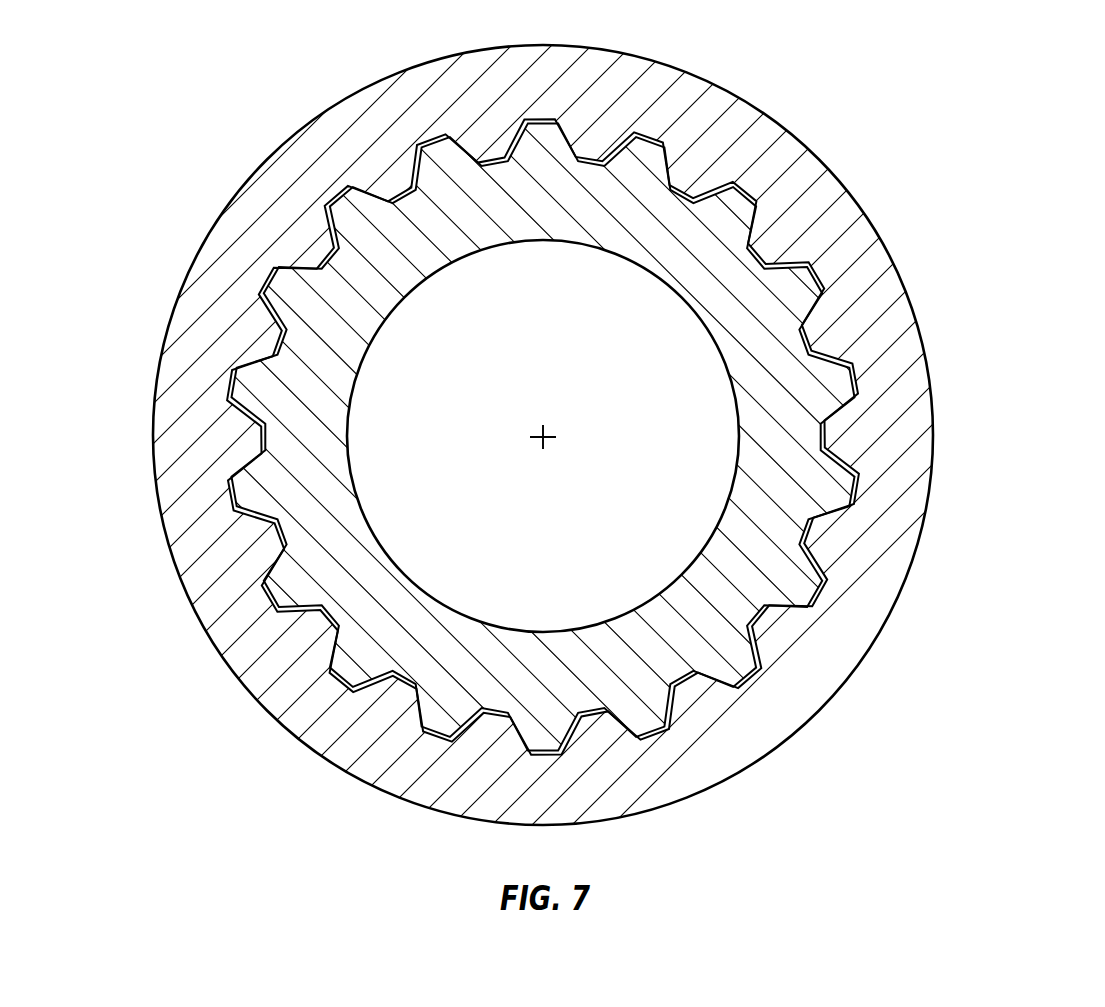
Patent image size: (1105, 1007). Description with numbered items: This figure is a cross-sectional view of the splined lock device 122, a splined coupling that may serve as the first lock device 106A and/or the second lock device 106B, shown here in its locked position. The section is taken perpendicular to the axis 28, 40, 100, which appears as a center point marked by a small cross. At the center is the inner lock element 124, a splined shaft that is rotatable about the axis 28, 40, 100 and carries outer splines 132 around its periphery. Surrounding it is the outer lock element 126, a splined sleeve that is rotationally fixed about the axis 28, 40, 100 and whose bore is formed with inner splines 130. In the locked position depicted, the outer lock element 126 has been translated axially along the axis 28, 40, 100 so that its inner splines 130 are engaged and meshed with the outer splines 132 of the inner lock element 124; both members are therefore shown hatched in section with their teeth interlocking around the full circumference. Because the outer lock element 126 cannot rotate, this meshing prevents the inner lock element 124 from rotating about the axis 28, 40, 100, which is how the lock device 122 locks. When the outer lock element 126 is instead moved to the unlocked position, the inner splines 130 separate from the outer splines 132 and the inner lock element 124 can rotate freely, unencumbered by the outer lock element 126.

The first lock device 106A is at (552, 427).
The second lock device 106B is at (552, 427).
The splined lock device 122 is at (552, 427).
The outer lock element 126 is at (552, 435).
The outer splines 132 is at (787, 177).
The inner splines 130 is at (637, 287).
The inner lock element 124 is at (712, 346).
The axis 28 is at (546, 440).
The axis 40 is at (549, 475).
The axis 100 is at (569, 475).